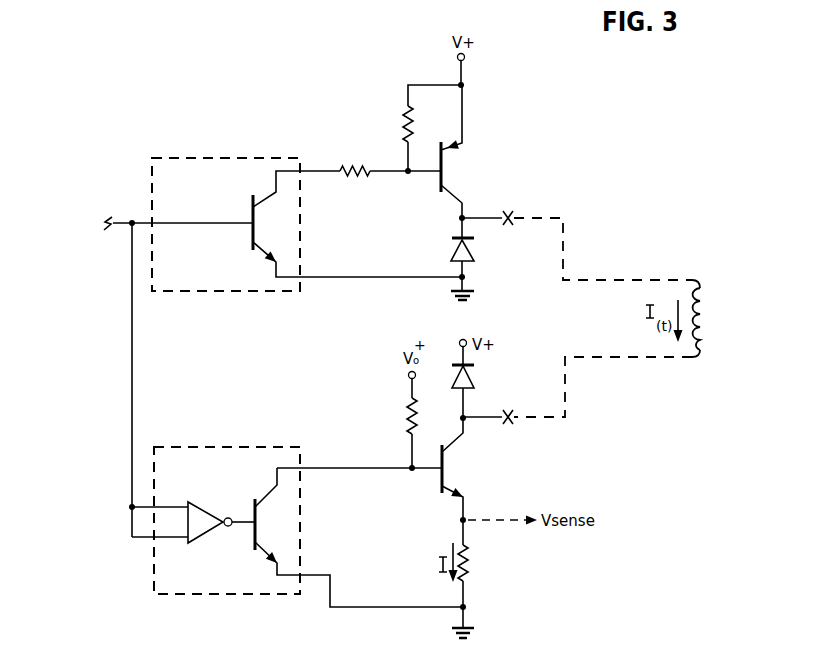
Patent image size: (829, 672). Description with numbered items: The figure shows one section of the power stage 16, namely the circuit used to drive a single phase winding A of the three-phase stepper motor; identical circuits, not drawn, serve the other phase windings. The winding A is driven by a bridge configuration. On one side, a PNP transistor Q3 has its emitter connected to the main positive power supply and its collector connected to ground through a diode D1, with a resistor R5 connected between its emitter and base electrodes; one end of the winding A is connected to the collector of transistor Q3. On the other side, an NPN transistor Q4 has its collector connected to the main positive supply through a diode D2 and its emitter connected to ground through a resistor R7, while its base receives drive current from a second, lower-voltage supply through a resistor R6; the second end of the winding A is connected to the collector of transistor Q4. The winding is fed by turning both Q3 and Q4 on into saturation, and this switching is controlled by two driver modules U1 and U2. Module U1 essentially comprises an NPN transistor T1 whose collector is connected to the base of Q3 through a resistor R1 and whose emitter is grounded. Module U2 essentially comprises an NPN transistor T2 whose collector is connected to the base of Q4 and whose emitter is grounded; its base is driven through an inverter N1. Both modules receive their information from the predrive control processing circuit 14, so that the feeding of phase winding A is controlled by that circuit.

The predrive control processing circuit 14 is at (98, 238).
The power stage 16 is at (268, 140).
The driver module U1 is at (238, 293).
The driver module U2 is at (246, 596).
The NPN transistor T1 is at (357, 224).
The NPN transistor T2 is at (359, 537).
The inverter N1 is at (214, 541).
The PNP transistor Q3 is at (455, 151).
The NPN transistor Q4 is at (457, 469).
The resistor R1 is at (371, 180).
The resistor R5 is at (402, 124).
The resistor R6 is at (409, 414).
The resistor R7 is at (470, 566).
The diode D1 is at (476, 246).
The diode D2 is at (476, 380).
The phase winding A is at (698, 318).